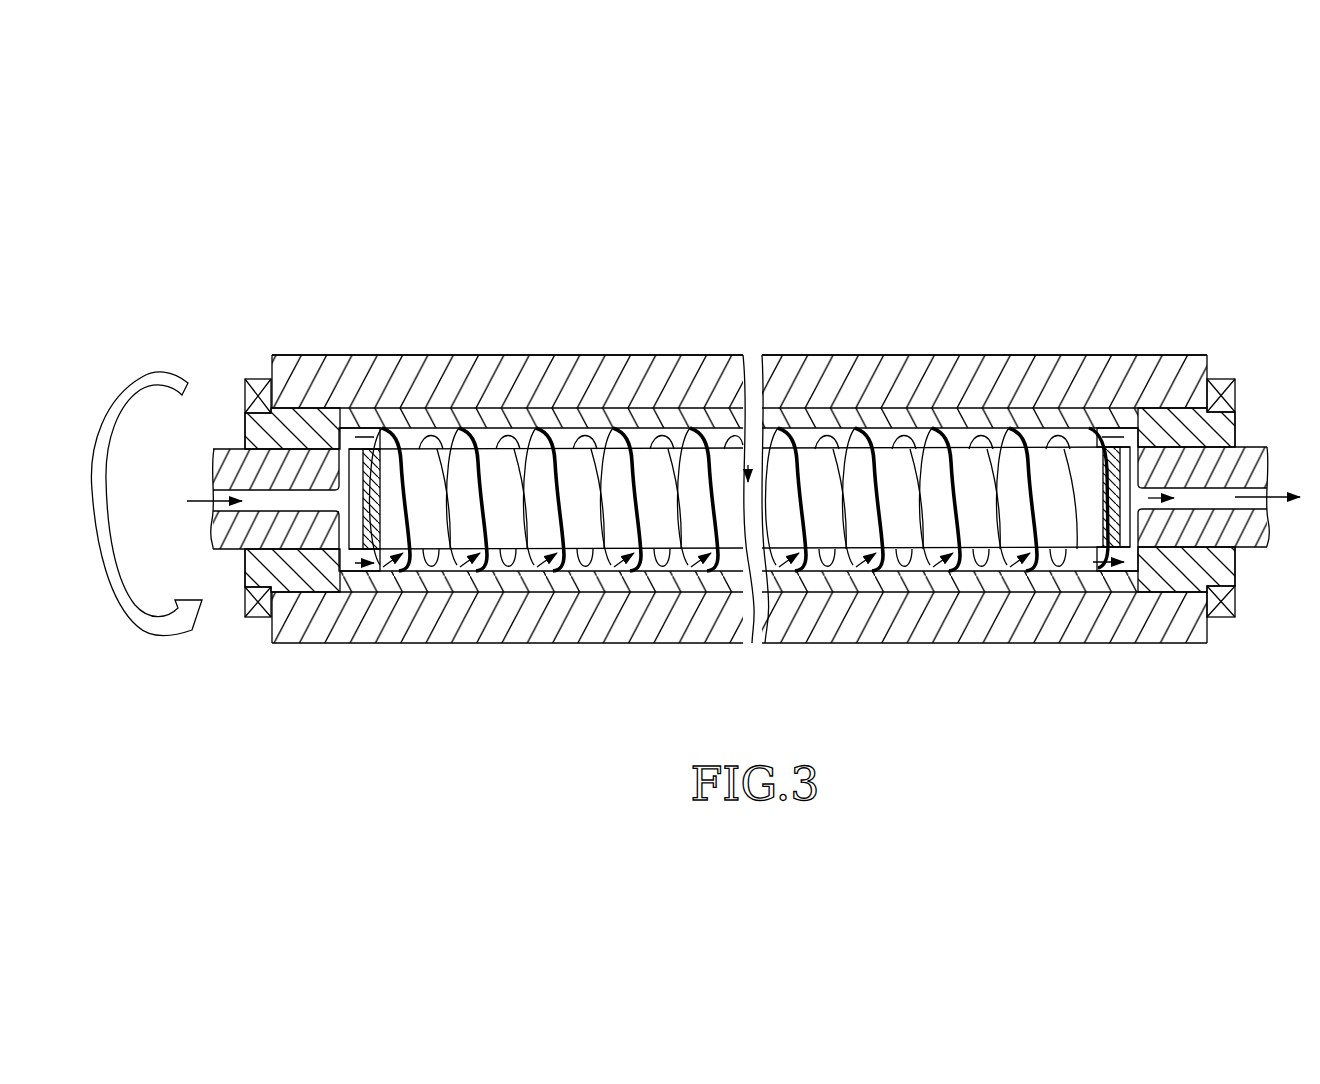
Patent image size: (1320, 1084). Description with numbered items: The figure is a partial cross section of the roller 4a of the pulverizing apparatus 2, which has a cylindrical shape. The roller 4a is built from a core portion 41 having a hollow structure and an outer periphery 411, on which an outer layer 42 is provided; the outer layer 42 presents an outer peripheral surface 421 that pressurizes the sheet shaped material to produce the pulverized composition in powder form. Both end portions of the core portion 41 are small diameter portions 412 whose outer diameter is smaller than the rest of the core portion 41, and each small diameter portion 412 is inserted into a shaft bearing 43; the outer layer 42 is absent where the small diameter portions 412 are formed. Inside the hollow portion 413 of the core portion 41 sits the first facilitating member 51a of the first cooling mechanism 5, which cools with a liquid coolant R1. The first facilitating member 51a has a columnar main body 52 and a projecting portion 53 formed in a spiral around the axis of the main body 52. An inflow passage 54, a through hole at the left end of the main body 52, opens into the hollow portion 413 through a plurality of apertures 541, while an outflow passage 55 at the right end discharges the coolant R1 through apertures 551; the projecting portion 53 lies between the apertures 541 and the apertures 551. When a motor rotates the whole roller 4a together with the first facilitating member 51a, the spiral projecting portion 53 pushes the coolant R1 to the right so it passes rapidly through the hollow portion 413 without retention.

The developing device 2 is at (1034, 243).
The roller 4a is at (739, 456).
The outer layer 42 is at (739, 471).
The outer peripheral surface 421 is at (828, 355).
The core portion 41 is at (739, 445).
The outer periphery 411 is at (1055, 405).
The hollow portion 413 is at (596, 427).
The small diameter portion 412 is at (244, 400).
The shaft bearing 43 is at (255, 378).
The inflow passage 54 is at (323, 565).
The apertures 541 is at (345, 427).
The outflow passage 55 is at (1193, 590).
The apertures 551 is at (1136, 430).
The first facilitating member 51a is at (724, 420).
The first cooling mechanism 5 is at (724, 430).
The main body 52 is at (638, 446).
The projecting portion 53 is at (713, 446).
The coolant R1 is at (198, 505).